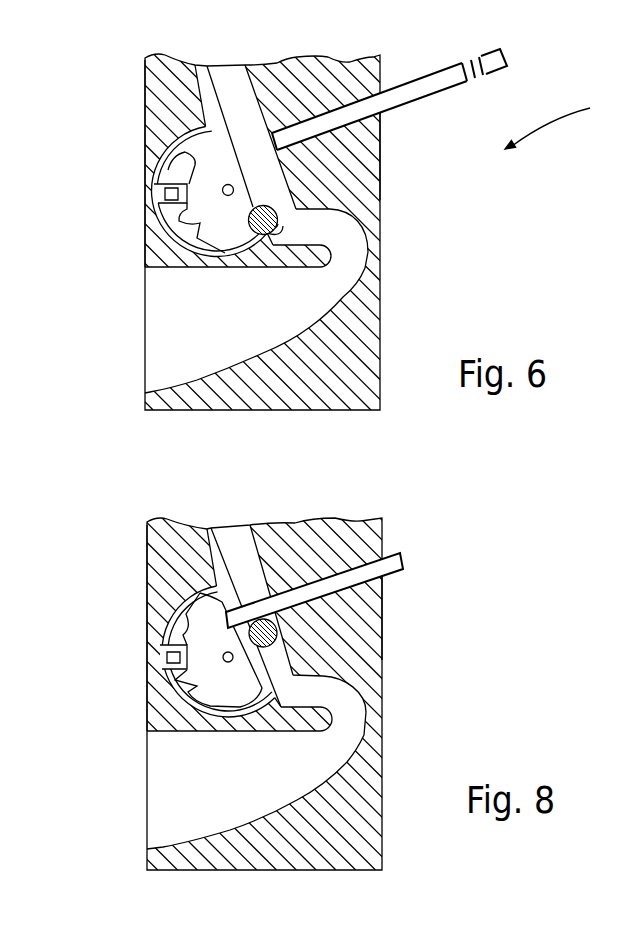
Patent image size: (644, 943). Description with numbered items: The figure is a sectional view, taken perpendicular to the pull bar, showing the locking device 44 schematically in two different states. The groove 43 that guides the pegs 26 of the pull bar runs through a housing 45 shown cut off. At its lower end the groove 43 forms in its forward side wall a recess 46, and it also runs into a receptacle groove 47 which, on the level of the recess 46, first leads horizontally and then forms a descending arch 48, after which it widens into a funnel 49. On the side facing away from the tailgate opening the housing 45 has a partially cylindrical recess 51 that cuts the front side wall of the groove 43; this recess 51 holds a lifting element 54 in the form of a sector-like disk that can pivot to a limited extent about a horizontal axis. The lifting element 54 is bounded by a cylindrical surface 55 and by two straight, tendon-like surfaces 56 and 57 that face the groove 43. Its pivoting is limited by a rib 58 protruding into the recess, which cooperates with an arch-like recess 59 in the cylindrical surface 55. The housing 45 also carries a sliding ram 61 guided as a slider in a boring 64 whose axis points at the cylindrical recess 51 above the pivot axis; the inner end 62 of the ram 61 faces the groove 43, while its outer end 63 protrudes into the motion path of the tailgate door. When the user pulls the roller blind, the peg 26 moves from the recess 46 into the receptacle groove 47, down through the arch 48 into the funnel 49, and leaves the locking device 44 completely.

In FIG. 6, the peg 26 is at (278, 226).
In FIG. 8, the peg 26 is at (279, 633).
In FIG. 6, the groove 43 is at (243, 100).
In FIG. 8, the groove 43 is at (236, 549).
In FIG. 6, the locking device 44 is at (560, 119).
In FIG. 6, the housing 45 is at (151, 94).
In FIG. 8, the housing 45 is at (357, 842).
In FIG. 6, the recess 46 is at (282, 223).
In FIG. 6, the receptacle groove 47 is at (312, 234).
In FIG. 6, the arch 48 is at (341, 268).
In FIG. 8, the arch 48 is at (341, 730).
In FIG. 6, the funnel 49 is at (165, 350).
In FIG. 8, the funnel 49 is at (170, 777).
In FIG. 6, the partially cylindrical recess 51 is at (173, 174).
In FIG. 6, the lifting element 54 is at (197, 218).
In FIG. 8, the lifting element 54 is at (163, 620).
In FIG. 6, the cylindrical surface 55 is at (196, 223).
In FIG. 6, the straight surface 56 is at (225, 233).
In FIG. 8, the straight surface 56 is at (287, 688).
In FIG. 6, the straight surface 57 is at (202, 65).
In FIG. 8, the straight surface 57 is at (182, 602).
In FIG. 6, the rib 58 is at (173, 192).
In FIG. 8, the rib 58 is at (173, 653).
In FIG. 6, the arch-like recess 59 is at (153, 128).
In FIG. 8, the arch-like recess 59 is at (167, 680).
In FIG. 6, the sliding ram 61 is at (423, 78).
In FIG. 8, the sliding ram 61 is at (314, 590).
In FIG. 6, the inner end 62 is at (309, 118).
In FIG. 6, the outer end 63 is at (498, 64).
In FIG. 6, the boring 64 is at (380, 141).
In FIG. 8, the boring 64 is at (380, 600).